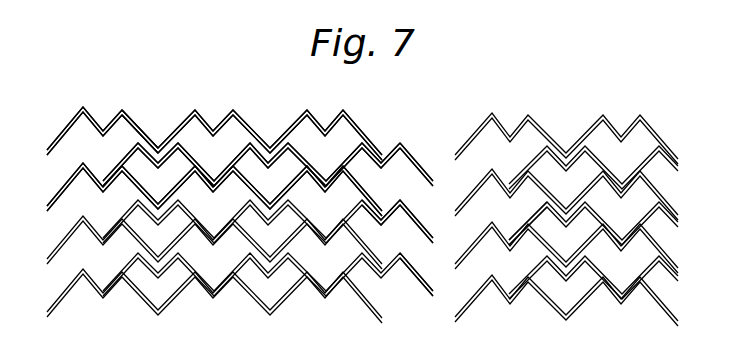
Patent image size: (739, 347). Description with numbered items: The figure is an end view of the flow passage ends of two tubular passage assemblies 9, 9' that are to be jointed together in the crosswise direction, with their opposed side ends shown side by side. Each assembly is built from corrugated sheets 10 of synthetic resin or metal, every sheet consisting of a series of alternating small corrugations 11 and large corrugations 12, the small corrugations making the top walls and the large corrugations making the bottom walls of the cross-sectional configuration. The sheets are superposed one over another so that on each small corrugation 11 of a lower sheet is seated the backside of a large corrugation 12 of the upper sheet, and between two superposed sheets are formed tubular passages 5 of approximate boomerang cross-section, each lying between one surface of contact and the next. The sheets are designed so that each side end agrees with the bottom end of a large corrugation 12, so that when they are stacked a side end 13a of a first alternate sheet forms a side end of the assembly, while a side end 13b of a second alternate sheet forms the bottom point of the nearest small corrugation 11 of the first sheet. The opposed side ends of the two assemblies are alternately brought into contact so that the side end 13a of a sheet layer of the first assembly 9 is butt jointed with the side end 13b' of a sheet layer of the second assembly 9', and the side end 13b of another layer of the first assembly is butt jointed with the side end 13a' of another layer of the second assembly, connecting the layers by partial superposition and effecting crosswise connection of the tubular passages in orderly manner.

The tubular passage assembly 9 is at (240, 184).
The second tubular passage assembly 9' is at (566, 197).
The corrugated sheet 10 is at (69, 121).
The tubular passage 5 is at (168, 162).
The small corrugation 11 is at (220, 170).
The large corrugation 12 is at (193, 142).
The side end of first alternate sheet 13a is at (423, 147).
The side end of second alternate sheet 13b is at (397, 203).
The side end of sheet layer of second assembly 13a' is at (420, 270).
The side end of sheet layer of second assembly 13b' is at (507, 239).